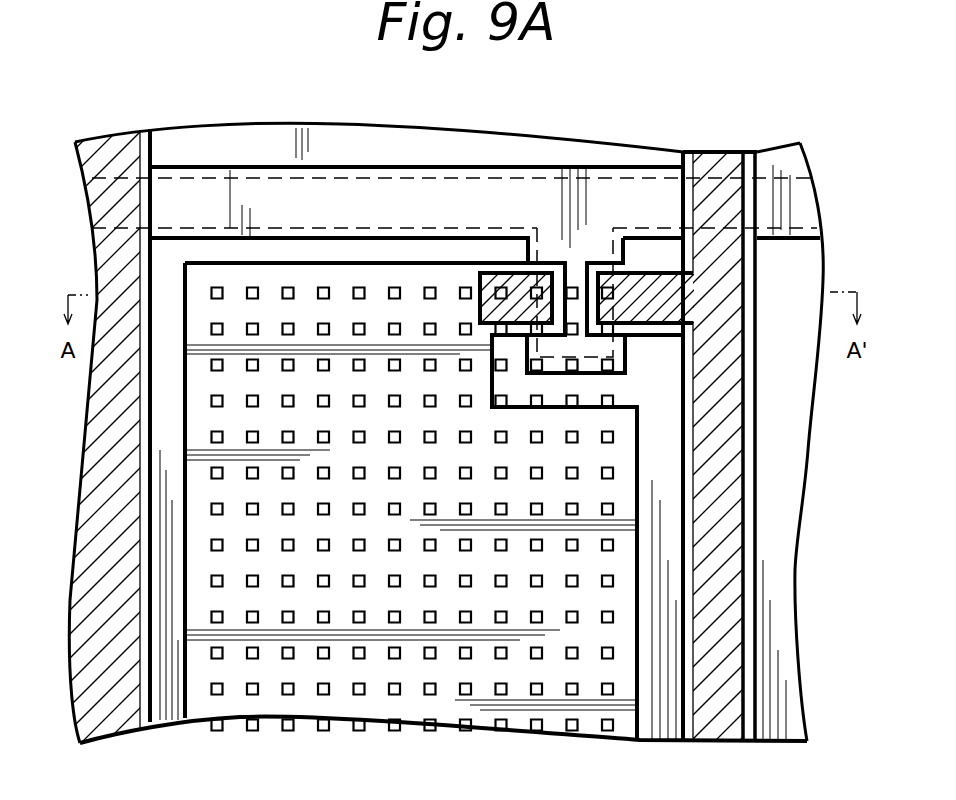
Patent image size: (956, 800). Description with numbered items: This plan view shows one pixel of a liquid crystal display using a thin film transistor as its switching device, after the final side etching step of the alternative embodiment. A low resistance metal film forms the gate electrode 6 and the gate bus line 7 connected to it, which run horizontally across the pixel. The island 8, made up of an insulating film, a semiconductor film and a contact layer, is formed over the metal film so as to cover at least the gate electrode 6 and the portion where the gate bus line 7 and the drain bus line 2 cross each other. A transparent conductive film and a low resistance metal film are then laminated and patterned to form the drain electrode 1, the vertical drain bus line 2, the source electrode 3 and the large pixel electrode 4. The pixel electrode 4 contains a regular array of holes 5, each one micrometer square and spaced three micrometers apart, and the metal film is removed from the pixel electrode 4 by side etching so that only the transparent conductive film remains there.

The drain electrode 1 is at (645, 287).
The drain bus line 2 is at (720, 720).
The source electrode 3 is at (510, 287).
The pixel electrode 4 is at (200, 693).
The holes 5 is at (323, 690).
The gate electrode 6 is at (607, 347).
The gate bus line 7 is at (798, 211).
The island 8 is at (607, 363).